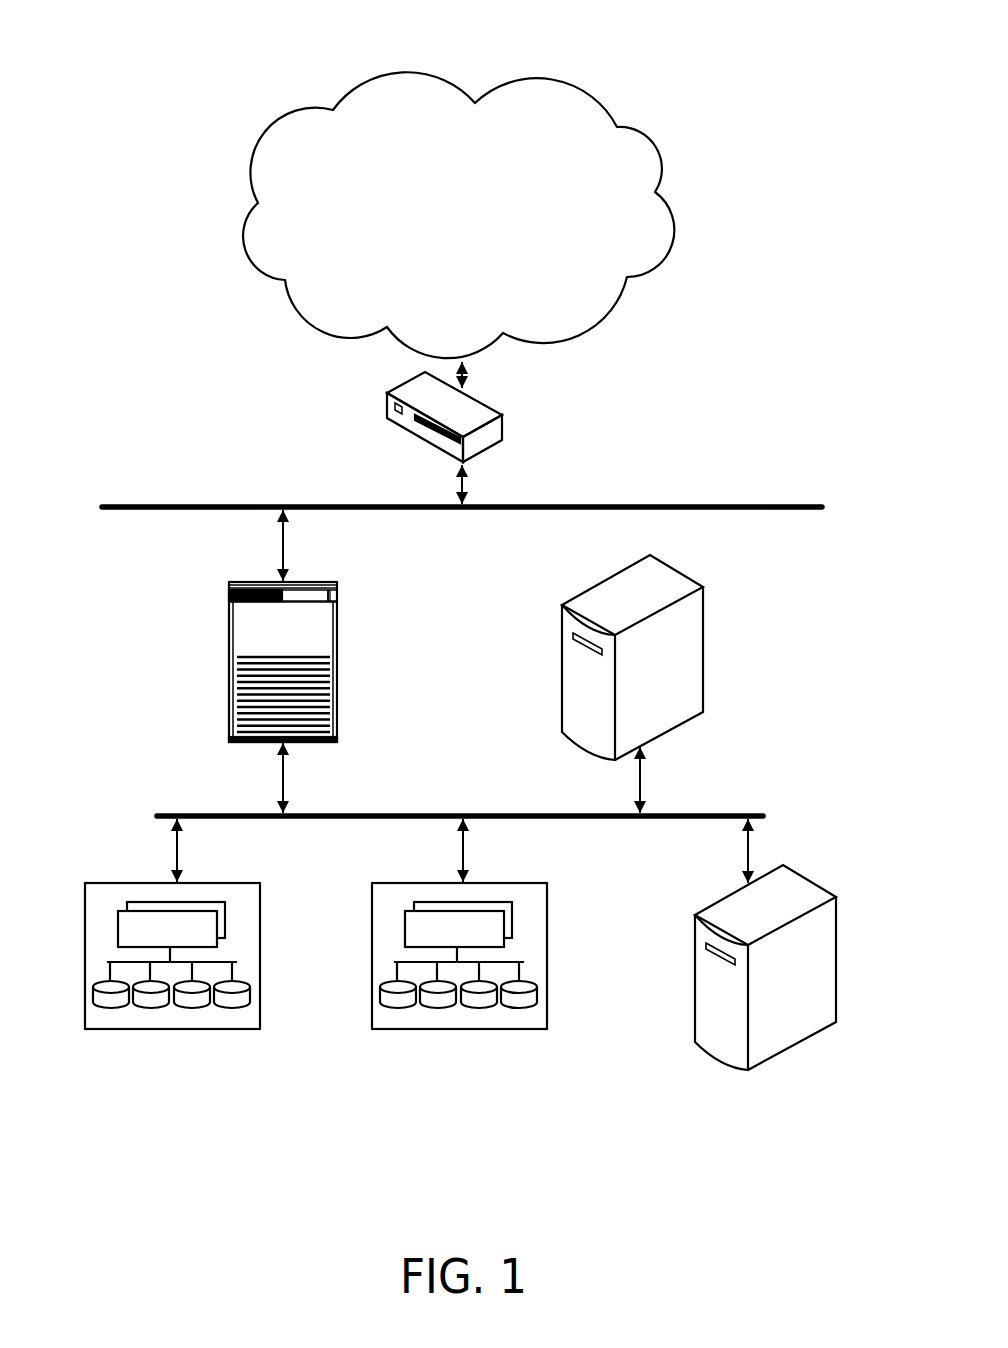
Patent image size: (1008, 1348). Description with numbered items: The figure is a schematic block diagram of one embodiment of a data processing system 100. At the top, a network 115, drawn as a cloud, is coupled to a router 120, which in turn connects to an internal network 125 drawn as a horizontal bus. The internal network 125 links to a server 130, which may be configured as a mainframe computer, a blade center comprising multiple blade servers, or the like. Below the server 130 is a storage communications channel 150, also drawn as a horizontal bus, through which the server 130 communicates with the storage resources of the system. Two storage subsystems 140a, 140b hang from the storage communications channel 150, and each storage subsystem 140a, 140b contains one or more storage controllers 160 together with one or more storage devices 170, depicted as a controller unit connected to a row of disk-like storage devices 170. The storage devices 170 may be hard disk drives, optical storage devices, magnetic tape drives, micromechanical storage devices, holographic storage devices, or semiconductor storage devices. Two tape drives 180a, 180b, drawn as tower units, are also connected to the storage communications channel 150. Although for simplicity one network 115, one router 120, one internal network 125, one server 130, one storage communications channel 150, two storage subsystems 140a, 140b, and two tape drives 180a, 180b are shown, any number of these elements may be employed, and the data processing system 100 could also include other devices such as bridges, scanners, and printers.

The data processing system 100 is at (107, 65).
The network 115 is at (473, 244).
The router 120 is at (503, 415).
The internal network 125 is at (122, 506).
The server 130 is at (337, 583).
The storage communications channel 150 is at (388, 812).
The storage subsystem 140a is at (260, 885).
The storage subsystem 140b is at (547, 883).
The storage controller 160 is at (118, 925).
The storage device 170 is at (93, 993).
The tape drive 180a is at (703, 617).
The tape drive 180b is at (840, 923).